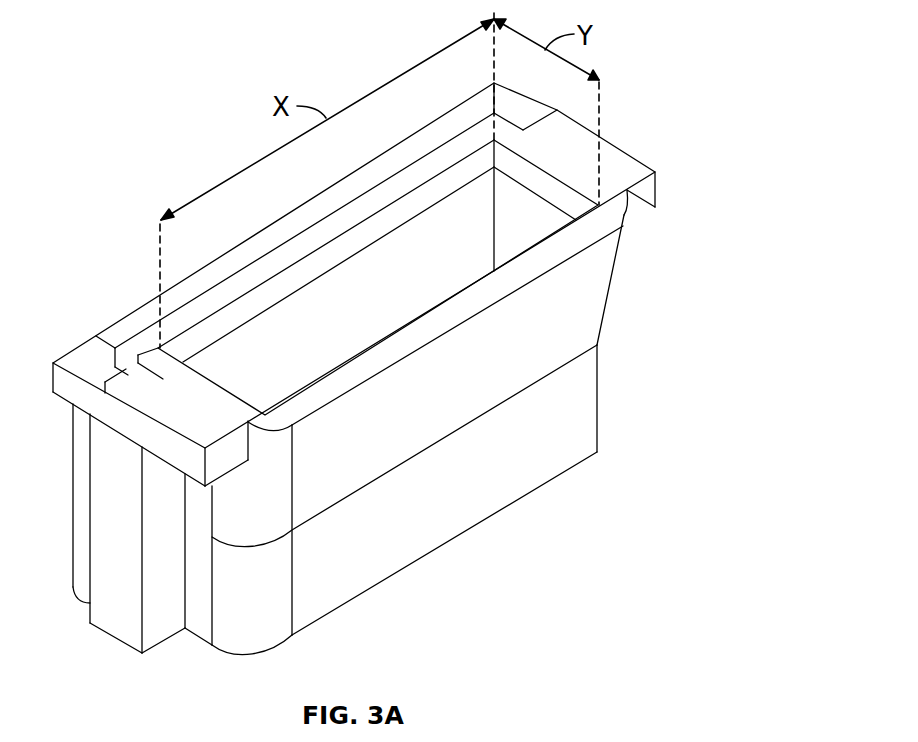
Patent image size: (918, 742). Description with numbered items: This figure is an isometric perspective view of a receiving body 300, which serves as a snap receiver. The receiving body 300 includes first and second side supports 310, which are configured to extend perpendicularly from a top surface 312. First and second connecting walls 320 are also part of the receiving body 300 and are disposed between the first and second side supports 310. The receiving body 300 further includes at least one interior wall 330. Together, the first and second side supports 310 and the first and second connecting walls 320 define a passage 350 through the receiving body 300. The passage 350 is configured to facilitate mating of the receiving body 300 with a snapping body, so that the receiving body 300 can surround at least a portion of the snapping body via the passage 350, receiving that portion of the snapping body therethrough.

The receiving body 300 is at (146, 149).
The first and second side supports 310 is at (128, 617).
The top surface 312 is at (306, 402).
The first and second connecting walls 320 is at (435, 523).
The interior wall 330 is at (308, 308).
The passage 350 is at (453, 289).